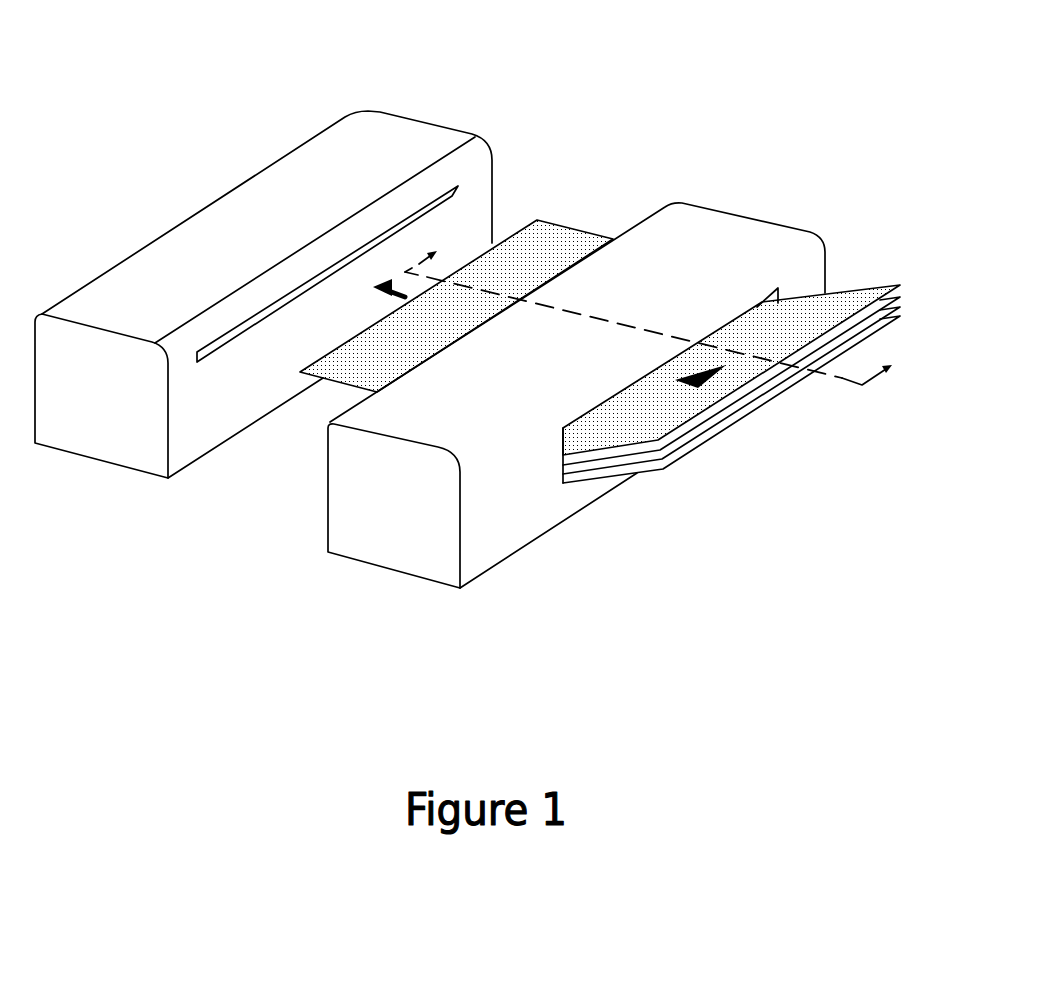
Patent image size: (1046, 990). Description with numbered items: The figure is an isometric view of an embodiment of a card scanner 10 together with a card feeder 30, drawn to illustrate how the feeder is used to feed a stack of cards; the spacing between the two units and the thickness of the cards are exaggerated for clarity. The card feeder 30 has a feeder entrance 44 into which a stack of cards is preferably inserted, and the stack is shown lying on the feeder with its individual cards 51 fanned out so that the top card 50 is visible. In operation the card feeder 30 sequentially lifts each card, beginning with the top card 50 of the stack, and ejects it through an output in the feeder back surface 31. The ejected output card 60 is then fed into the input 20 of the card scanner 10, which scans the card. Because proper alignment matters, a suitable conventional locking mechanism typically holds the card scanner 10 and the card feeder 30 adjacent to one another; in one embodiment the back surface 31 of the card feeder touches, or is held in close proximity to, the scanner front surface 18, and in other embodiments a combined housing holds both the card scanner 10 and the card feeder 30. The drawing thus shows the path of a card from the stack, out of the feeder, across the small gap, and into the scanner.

The card scanner 10 is at (445, 97).
The scanner front surface 18 is at (187, 418).
The input 20 is at (455, 190).
The card feeder 30 is at (742, 188).
The feeder back surface 31 is at (323, 500).
The feeder entrance 44 is at (724, 365).
The top card 50 is at (805, 315).
The media sheet 51 is at (903, 290).
The output card 60 is at (558, 238).